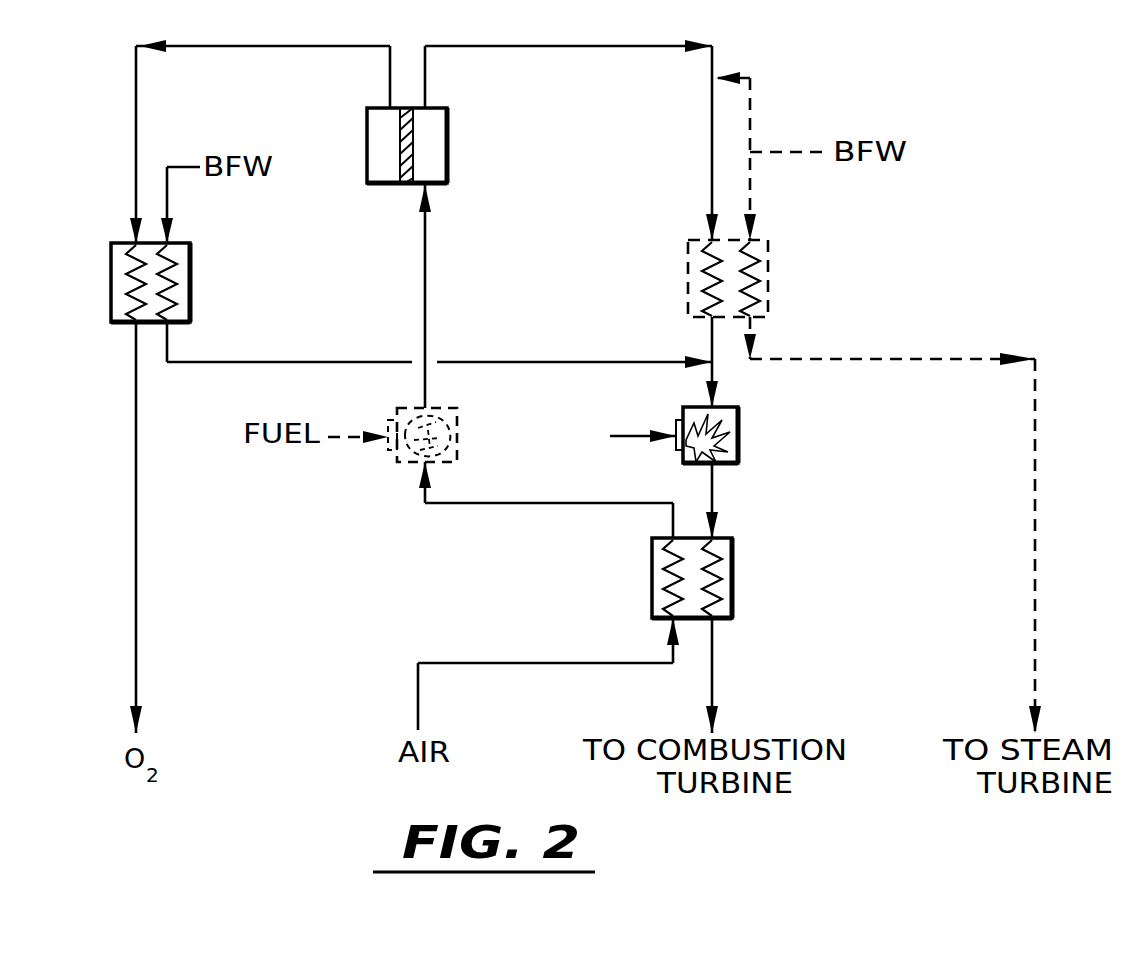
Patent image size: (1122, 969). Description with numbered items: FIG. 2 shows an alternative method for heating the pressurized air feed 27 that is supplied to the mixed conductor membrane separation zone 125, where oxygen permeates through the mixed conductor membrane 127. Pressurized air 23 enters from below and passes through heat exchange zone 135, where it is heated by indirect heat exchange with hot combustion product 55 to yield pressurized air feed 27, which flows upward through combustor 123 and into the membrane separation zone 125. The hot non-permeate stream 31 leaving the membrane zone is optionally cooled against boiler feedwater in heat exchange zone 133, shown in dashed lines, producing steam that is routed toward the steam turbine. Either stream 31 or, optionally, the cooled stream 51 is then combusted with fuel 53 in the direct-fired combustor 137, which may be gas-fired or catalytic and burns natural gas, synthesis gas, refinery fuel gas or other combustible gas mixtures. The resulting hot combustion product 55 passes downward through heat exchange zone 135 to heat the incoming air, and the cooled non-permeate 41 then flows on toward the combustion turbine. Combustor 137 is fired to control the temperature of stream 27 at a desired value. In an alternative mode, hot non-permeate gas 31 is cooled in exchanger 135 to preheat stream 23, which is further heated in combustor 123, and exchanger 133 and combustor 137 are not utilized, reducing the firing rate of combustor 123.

The pressurized air 23 is at (418, 672).
The pressurized air feed 27 is at (425, 243).
The hot non-permeate stream 31 is at (620, 47).
The cooled non-permeate 41 is at (712, 665).
The cooled non-permeate stream 51 is at (712, 343).
The fuel 53 is at (628, 436).
The hot combustion product 55 is at (712, 500).
The combustor 123 is at (400, 462).
The mixed conductor membrane separation zone 125 is at (447, 148).
The mixed conductor membrane 127 is at (395, 124).
The heat exchange zone 133 is at (768, 285).
The heat exchange zone 135 is at (732, 580).
The direct-fired combustor 137 is at (738, 418).